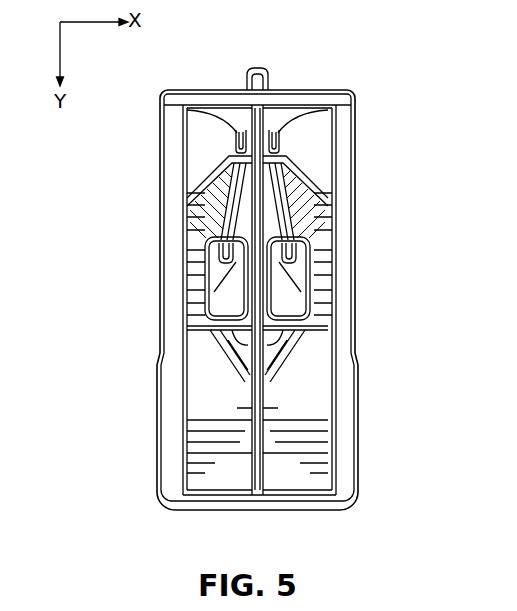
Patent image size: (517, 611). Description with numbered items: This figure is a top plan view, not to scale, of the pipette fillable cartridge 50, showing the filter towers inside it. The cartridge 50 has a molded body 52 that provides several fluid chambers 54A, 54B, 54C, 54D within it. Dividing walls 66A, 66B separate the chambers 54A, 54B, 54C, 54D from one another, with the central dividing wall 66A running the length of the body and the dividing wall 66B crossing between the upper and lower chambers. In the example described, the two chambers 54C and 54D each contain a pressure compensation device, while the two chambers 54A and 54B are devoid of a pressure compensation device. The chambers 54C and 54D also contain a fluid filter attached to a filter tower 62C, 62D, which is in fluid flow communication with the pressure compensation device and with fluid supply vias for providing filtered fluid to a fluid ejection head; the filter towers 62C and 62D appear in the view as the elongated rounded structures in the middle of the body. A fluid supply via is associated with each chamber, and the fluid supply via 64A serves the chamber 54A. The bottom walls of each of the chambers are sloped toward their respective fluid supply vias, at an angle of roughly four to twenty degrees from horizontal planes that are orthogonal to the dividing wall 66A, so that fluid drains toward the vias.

The cartridge 50 is at (106, 204).
The molded body 52 is at (358, 468).
The fluid chamber 54A is at (219, 141).
The fluid chamber 54B is at (315, 141).
The fluid chamber 54C is at (197, 396).
The fluid chamber 54D is at (306, 383).
The filter tower 62C is at (228, 213).
The filter tower 62D is at (287, 213).
The fluid supply via 64A is at (240, 131).
The dividing wall 66A is at (263, 398).
The dividing wall 66B is at (270, 131).